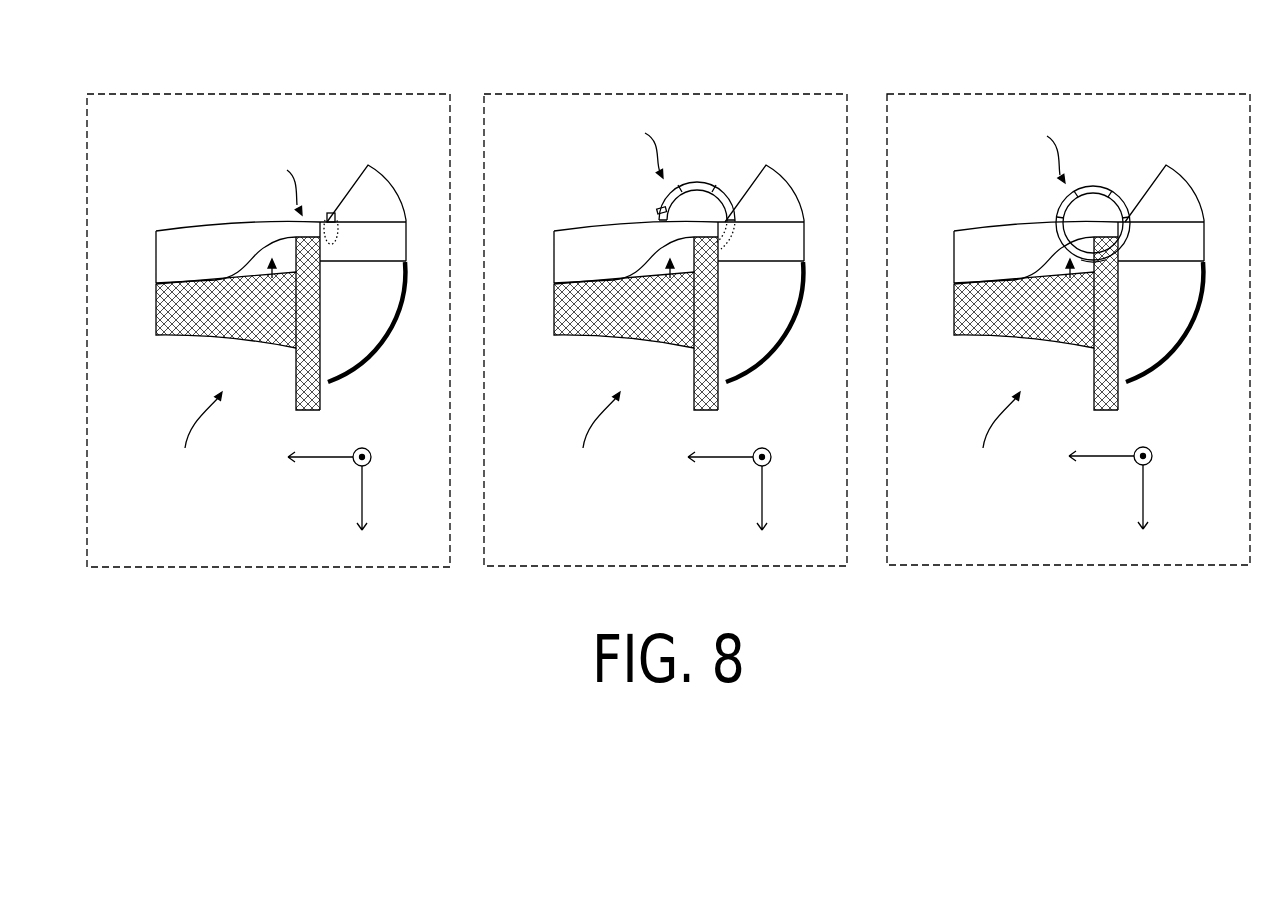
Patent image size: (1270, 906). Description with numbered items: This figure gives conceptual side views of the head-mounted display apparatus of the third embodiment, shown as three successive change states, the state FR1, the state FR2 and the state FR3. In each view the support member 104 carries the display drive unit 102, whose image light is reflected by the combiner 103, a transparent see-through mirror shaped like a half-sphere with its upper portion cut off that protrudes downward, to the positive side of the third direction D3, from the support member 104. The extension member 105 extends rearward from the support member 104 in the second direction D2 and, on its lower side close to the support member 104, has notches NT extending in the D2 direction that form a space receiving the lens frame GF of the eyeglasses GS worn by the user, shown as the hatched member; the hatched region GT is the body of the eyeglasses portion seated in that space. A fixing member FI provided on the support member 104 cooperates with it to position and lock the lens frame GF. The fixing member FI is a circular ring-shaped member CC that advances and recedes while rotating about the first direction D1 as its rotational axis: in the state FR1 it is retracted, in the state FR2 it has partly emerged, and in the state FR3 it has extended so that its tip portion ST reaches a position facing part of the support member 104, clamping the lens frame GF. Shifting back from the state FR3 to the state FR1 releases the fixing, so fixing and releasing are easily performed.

The display drive unit 102 is at (385, 198).
The combiner 103 is at (373, 353).
The support member 104 is at (402, 238).
The extension member 105 is at (201, 250).
The fixing member FI is at (662, 166).
The tip portion ST is at (331, 212).
The circular ring-shaped member CC is at (332, 248).
The hatched base body GT is at (205, 333).
The notches NT is at (250, 334).
The lens frame GF is at (297, 389).
The eyeglasses GS is at (591, 431).
The first direction D1 is at (765, 448).
The second direction D2 is at (696, 448).
The third direction D3 is at (764, 508).
The state FR1 is at (250, 93).
The state FR2 is at (650, 93).
The state FR3 is at (1049, 93).